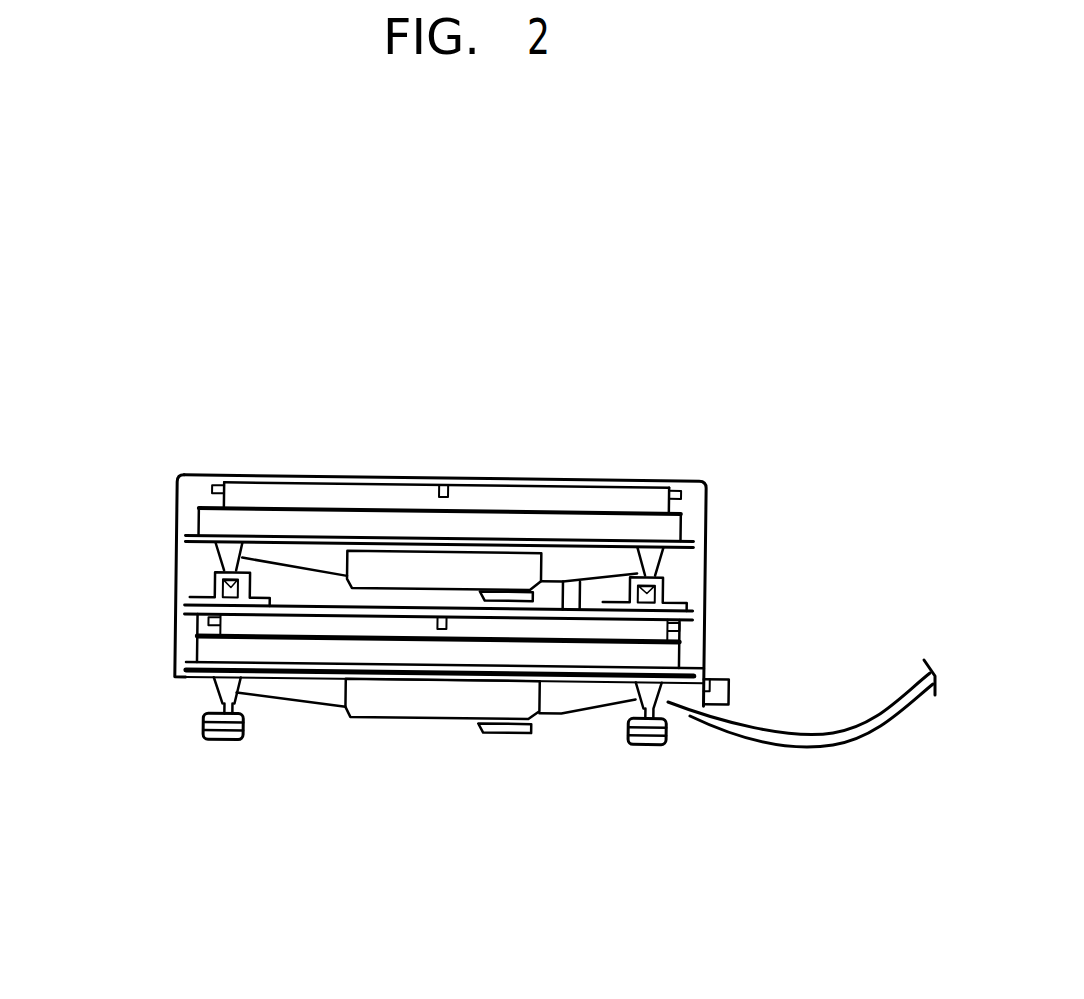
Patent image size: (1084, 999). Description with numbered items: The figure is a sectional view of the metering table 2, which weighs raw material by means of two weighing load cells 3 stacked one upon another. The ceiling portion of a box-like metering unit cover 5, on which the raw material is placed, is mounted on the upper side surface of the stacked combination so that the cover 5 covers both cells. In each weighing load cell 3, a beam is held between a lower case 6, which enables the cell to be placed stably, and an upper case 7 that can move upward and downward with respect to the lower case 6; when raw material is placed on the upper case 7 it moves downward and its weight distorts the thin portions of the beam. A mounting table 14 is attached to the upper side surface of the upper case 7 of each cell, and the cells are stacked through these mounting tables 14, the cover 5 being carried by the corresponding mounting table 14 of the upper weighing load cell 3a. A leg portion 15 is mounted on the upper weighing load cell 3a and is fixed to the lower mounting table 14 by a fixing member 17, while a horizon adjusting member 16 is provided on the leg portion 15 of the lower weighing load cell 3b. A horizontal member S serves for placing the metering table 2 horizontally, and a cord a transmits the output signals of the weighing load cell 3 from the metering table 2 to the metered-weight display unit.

The metering table 2 is at (557, 440).
The weighing load cell 3 is at (690, 577).
The upper weighing load cell 3a is at (375, 562).
The lower weighing load cell 3b is at (428, 702).
The metering unit cover 5 is at (641, 487).
The lower case 6 is at (565, 700).
The upper case 7 is at (707, 672).
The mounting table 14 is at (500, 500).
The leg portion 15 is at (222, 558).
The horizon adjusting member 16 is at (650, 750).
The fixing member 17 is at (217, 578).
The horizontal member S is at (722, 677).
The cord a is at (837, 747).